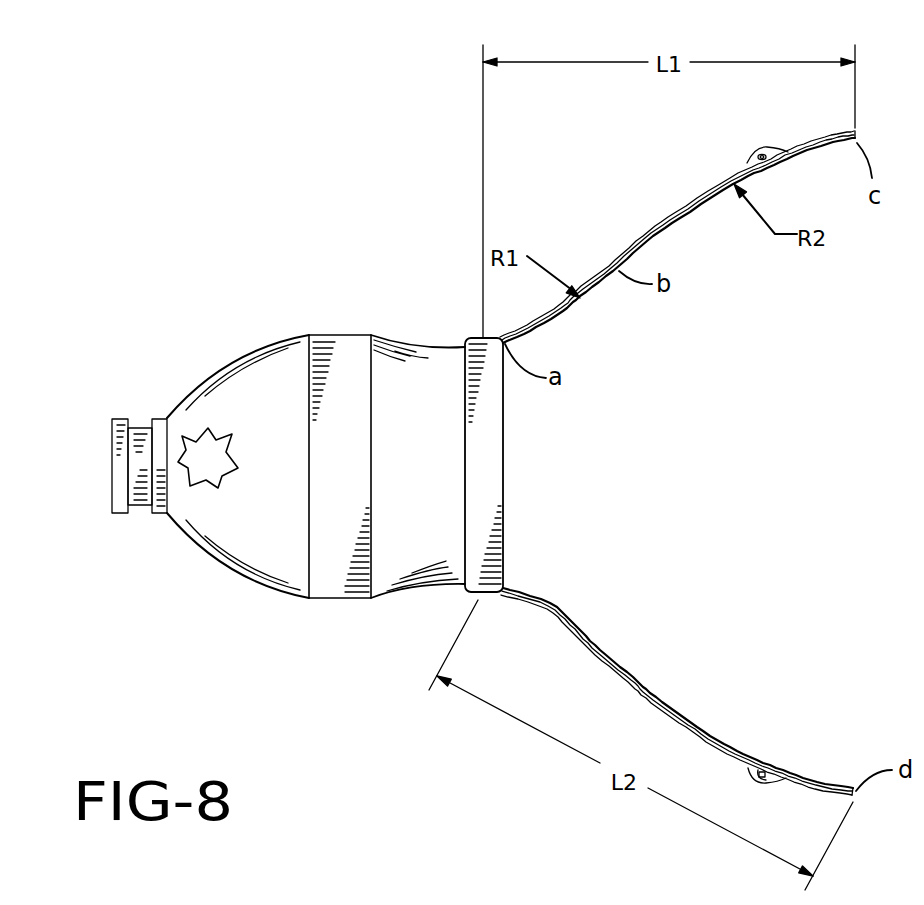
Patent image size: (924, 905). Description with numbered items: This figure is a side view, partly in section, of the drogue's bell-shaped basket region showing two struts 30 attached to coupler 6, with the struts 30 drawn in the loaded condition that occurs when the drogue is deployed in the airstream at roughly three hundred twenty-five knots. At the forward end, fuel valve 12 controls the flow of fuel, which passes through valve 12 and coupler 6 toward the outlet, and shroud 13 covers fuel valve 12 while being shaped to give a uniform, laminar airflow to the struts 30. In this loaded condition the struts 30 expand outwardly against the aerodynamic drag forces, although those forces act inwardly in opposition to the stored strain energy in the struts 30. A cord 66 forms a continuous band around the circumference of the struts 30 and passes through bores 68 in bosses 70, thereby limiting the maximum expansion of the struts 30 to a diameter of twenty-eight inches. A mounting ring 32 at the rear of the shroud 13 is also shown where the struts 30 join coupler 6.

The coupler 6 is at (448, 475).
The fuel valve 12 is at (204, 465).
The shroud 13 is at (355, 335).
The struts 30 is at (647, 237).
The ring 32 is at (465, 592).
The cord 66 is at (763, 781).
The bores 68 is at (761, 771).
The bosses 70 is at (749, 768).